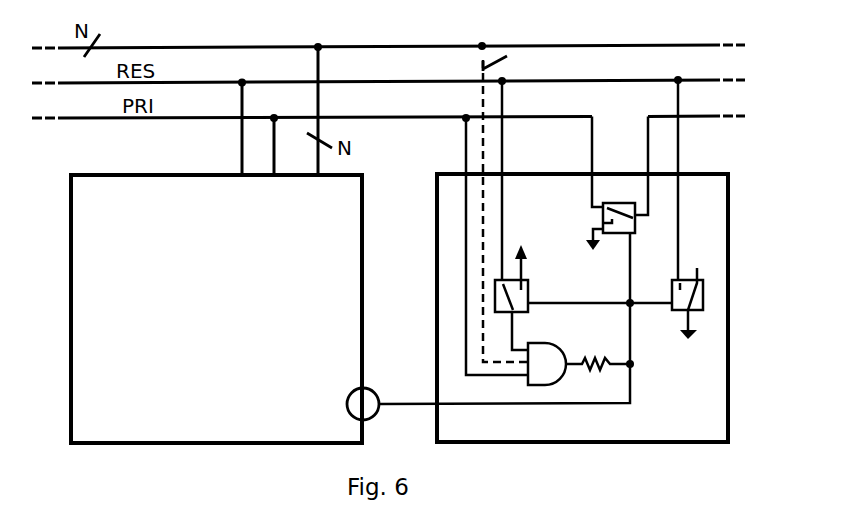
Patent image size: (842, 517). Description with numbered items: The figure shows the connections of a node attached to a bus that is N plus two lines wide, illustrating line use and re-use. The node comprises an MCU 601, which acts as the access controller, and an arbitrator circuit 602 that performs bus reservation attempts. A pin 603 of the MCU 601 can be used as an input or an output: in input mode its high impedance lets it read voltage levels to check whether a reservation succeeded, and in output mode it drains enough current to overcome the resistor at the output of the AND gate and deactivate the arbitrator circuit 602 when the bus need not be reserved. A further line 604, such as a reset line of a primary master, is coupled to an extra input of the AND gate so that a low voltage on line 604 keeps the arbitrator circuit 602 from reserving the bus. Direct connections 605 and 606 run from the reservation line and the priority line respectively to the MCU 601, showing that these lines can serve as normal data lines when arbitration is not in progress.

The MCU 601 is at (137, 445).
The arbitrator circuit 602 is at (502, 447).
The pin 603 is at (377, 389).
The line 604 is at (506, 56).
The direct connection 605 is at (240, 114).
The direct connection 606 is at (272, 167).